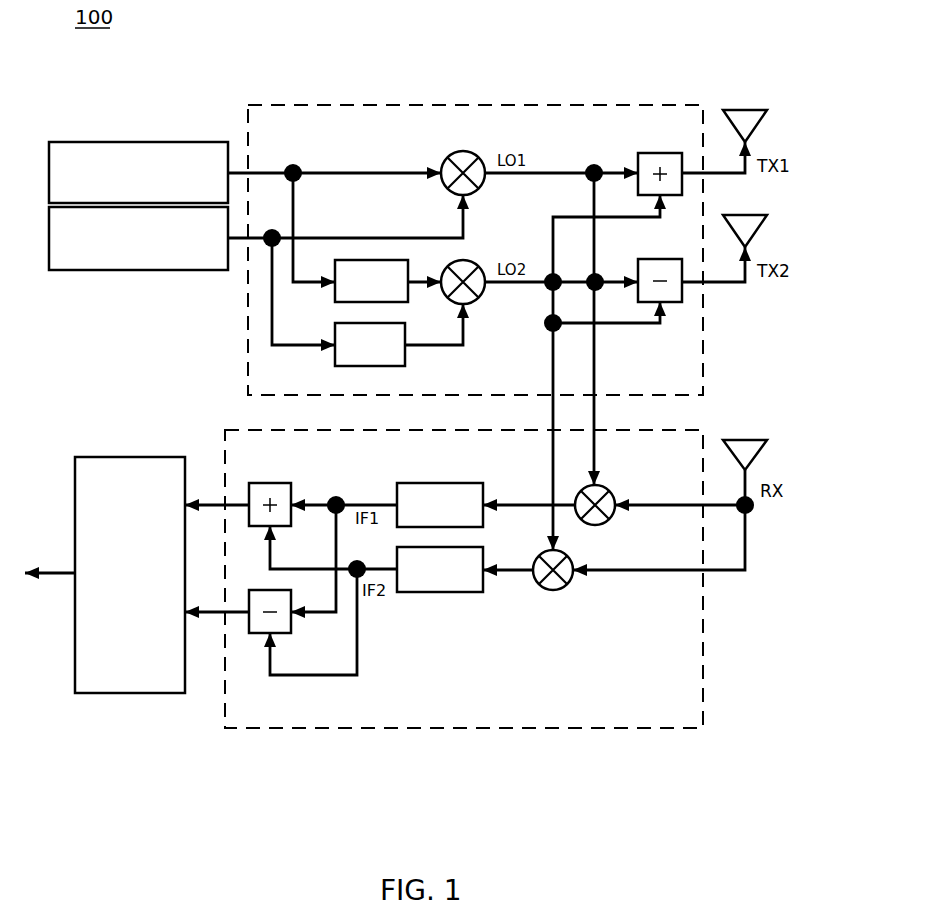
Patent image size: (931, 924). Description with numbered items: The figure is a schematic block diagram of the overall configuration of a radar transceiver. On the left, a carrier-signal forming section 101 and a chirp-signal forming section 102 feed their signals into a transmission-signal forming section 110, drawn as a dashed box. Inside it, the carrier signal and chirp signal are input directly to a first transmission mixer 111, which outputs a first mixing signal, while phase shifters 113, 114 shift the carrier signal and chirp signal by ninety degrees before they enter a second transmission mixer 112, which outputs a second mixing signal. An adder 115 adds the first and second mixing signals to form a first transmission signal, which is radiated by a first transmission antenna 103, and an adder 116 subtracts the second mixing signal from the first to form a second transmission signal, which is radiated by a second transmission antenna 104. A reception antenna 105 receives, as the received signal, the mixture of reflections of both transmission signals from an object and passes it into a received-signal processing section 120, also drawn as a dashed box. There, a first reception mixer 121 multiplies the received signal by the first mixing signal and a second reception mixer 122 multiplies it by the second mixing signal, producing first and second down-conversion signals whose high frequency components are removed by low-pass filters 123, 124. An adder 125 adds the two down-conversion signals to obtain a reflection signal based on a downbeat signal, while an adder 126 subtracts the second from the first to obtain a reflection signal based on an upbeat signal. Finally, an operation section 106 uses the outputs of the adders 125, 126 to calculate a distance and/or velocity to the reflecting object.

The carrier-signal forming section 101 is at (150, 142).
The chirp-signal forming section 102 is at (130, 270).
The first transmission antenna 103 is at (745, 110).
The second transmission antenna 104 is at (745, 215).
The reception antenna 105 is at (745, 440).
The operation section 106 is at (138, 457).
The transmission-signal forming section 110 is at (520, 105).
The first transmission mixer 111 is at (455, 152).
The second transmission mixer 112 is at (470, 262).
The phase shifter 113 is at (393, 258).
The phase shifter 114 is at (405, 353).
The adder 115 is at (655, 153).
The adder 116 is at (672, 302).
The received-signal processing section 120 is at (527, 728).
The first reception mixer 121 is at (604, 487).
The second reception mixer 122 is at (553, 590).
The low-pass filter 123 is at (432, 483).
The low-pass filter 124 is at (432, 592).
The adder 125 is at (265, 483).
The adder 126 is at (280, 633).